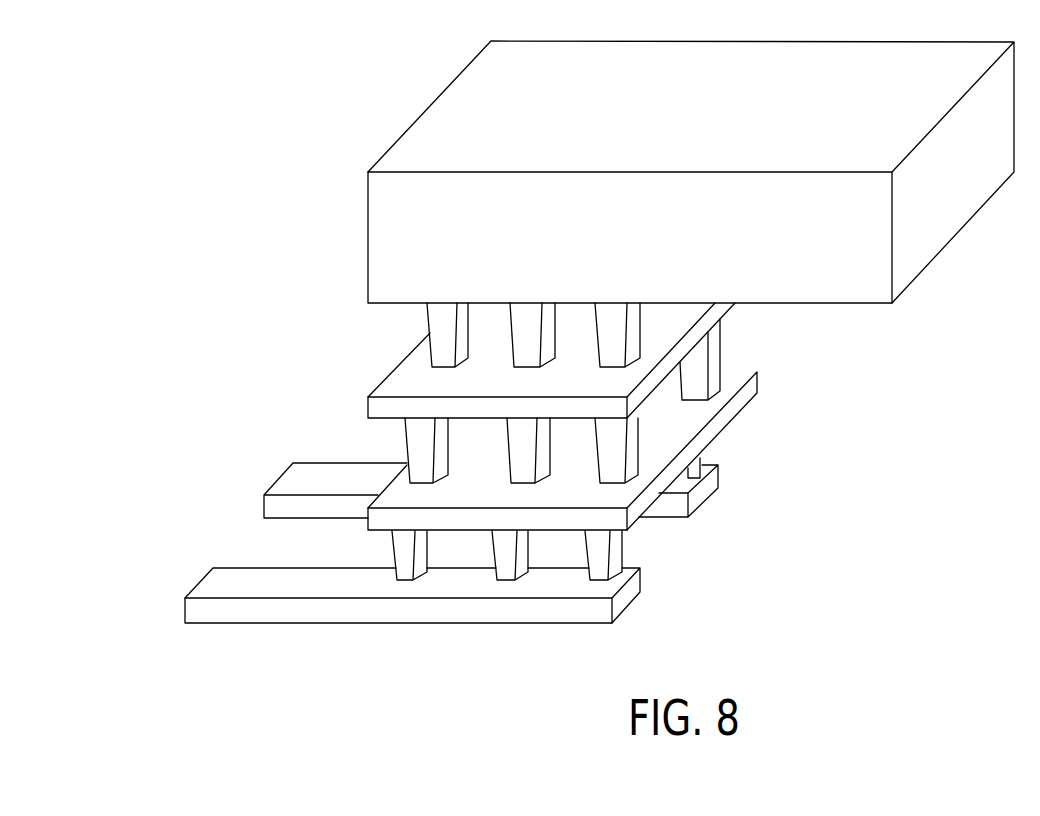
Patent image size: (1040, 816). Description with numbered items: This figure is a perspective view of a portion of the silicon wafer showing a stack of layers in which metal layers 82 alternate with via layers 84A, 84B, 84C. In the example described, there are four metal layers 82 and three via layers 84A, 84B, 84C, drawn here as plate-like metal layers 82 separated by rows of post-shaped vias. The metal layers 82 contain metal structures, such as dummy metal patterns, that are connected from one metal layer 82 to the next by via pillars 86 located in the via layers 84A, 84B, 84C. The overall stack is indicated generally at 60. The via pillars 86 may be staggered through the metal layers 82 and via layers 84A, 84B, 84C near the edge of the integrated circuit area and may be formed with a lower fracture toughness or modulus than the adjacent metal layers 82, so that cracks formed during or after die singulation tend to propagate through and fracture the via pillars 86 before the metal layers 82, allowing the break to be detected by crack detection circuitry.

The integrated circuit package assembly 60 is at (365, 62).
The metal layers 82 is at (392, 372).
The via layer 84A is at (370, 549).
The via layer 84B is at (395, 444).
The via layer 84C is at (405, 322).
The via pillars 86 is at (717, 340).